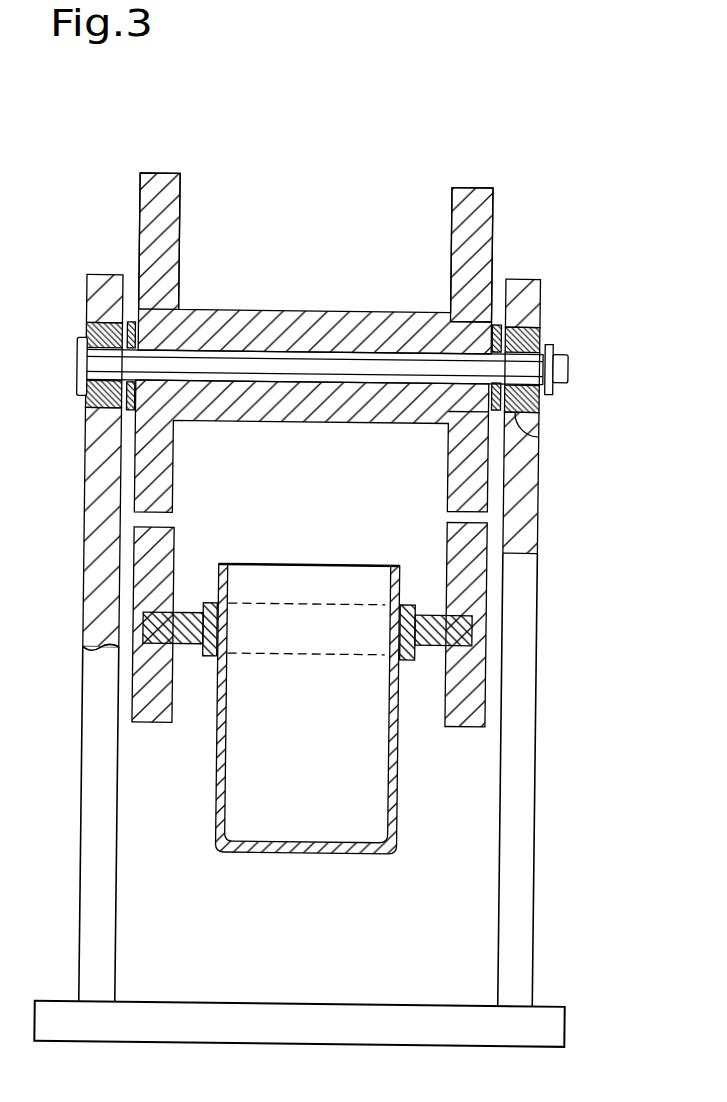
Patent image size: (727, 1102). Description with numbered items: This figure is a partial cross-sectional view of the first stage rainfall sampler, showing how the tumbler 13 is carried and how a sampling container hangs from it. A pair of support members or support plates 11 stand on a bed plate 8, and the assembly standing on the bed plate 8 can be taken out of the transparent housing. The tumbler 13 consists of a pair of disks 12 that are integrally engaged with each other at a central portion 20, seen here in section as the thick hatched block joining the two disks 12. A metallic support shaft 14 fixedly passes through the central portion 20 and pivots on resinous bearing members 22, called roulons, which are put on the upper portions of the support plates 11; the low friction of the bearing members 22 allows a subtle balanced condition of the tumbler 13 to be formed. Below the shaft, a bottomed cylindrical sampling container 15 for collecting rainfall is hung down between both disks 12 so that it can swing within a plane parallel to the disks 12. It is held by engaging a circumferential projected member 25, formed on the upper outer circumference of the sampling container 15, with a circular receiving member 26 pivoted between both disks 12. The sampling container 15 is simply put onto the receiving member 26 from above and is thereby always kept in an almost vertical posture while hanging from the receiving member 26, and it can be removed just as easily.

The bed plate 8 is at (307, 1000).
The support members (support plates) 11 is at (122, 799).
The disks 12 is at (178, 219).
The tumbler 13 is at (309, 623).
The metallic support shaft 14 is at (291, 385).
The sampling containers 15 is at (401, 779).
The central portion 20 is at (315, 300).
The bearing members 22 is at (100, 429).
The circumferential projected member 25 is at (407, 604).
The circular receiving member 26 is at (186, 613).